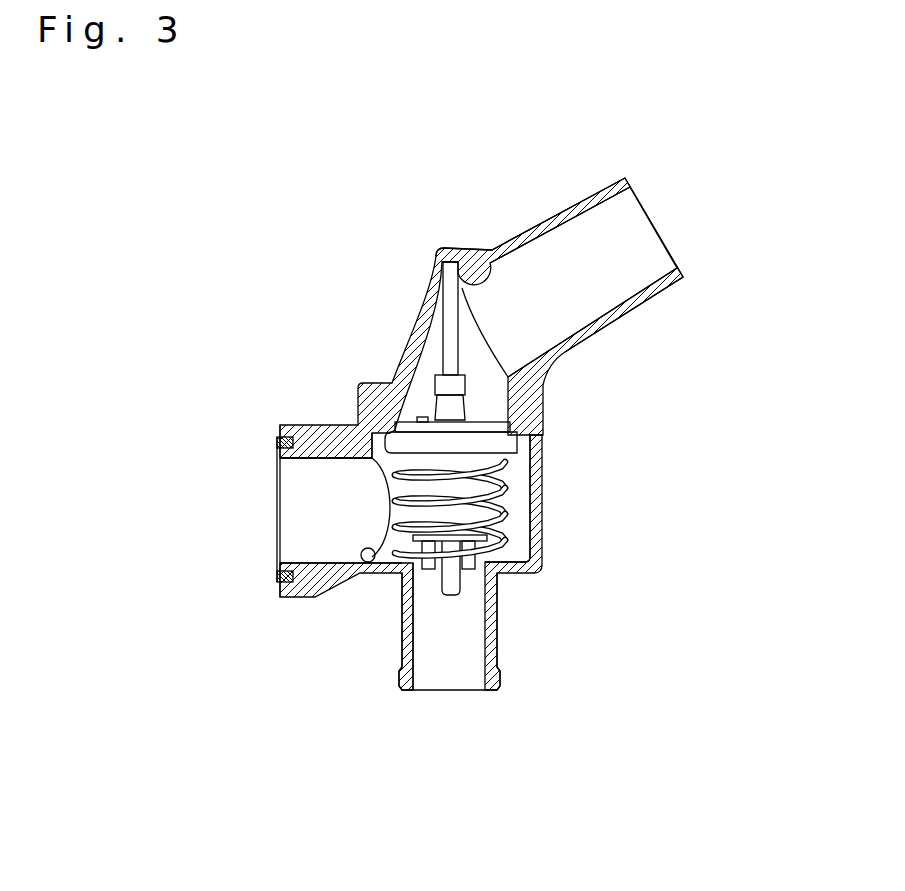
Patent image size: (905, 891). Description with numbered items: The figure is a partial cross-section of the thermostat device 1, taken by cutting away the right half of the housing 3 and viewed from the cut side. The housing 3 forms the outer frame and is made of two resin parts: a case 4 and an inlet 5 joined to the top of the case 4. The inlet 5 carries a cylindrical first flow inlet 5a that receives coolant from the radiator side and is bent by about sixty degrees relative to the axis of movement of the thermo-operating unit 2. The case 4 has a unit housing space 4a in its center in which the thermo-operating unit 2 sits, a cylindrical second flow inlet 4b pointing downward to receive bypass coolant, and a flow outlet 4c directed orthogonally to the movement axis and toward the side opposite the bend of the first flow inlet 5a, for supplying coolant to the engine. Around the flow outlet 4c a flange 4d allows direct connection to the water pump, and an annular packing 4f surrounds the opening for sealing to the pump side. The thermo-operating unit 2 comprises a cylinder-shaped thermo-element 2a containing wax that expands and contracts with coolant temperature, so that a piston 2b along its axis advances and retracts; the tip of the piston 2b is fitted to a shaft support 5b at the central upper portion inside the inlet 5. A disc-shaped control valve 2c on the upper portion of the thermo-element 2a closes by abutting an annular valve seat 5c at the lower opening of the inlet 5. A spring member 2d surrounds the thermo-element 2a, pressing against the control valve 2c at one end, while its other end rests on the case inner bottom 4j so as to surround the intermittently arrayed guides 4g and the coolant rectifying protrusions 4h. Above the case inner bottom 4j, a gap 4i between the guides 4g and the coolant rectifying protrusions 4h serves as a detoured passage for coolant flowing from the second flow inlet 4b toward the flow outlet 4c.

The thermostat device 1 is at (750, 190).
The thermo-operating unit 2 is at (522, 503).
The thermo-element 2a is at (497, 472).
The piston 2b is at (447, 347).
The control valve 2c is at (487, 430).
The spring member 2d is at (388, 488).
The housing 3 is at (437, 443).
The case 4 is at (537, 568).
The unit housing space 4a is at (520, 532).
The second flow inlet 4b is at (453, 677).
The flow outlet 4c is at (300, 512).
The flange 4d is at (278, 583).
The packing 4f is at (273, 542).
The guides 4g is at (449, 593).
The coolant rectifying protrusions 4h is at (412, 610).
The gap 4i is at (467, 573).
The case inner bottom 4j is at (359, 562).
The inlet 5 is at (623, 323).
The first flow inlet 5a is at (645, 227).
The shaft support 5b is at (487, 267).
The valve seat 5c is at (380, 461).